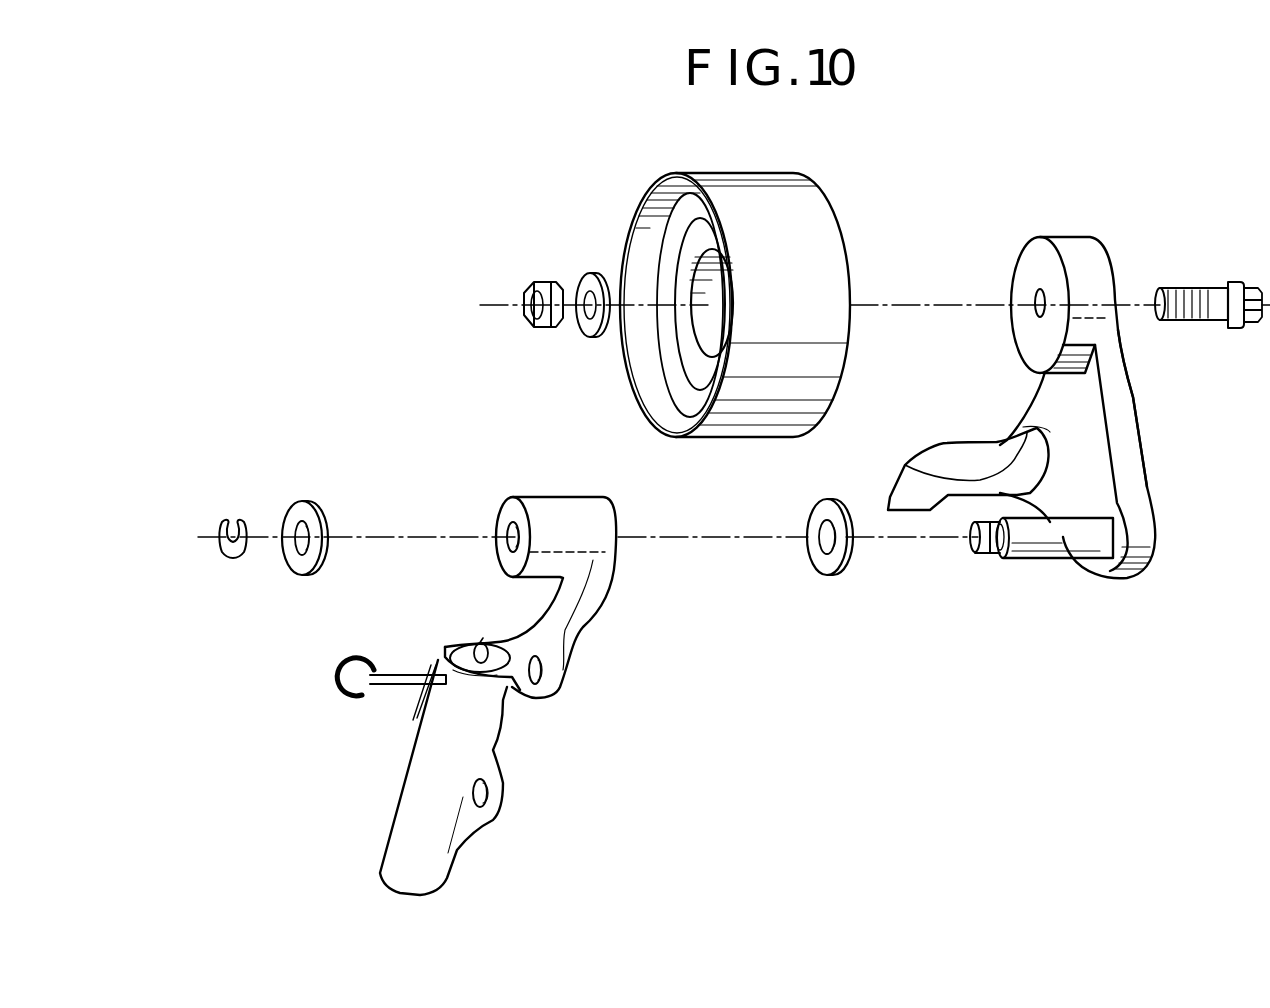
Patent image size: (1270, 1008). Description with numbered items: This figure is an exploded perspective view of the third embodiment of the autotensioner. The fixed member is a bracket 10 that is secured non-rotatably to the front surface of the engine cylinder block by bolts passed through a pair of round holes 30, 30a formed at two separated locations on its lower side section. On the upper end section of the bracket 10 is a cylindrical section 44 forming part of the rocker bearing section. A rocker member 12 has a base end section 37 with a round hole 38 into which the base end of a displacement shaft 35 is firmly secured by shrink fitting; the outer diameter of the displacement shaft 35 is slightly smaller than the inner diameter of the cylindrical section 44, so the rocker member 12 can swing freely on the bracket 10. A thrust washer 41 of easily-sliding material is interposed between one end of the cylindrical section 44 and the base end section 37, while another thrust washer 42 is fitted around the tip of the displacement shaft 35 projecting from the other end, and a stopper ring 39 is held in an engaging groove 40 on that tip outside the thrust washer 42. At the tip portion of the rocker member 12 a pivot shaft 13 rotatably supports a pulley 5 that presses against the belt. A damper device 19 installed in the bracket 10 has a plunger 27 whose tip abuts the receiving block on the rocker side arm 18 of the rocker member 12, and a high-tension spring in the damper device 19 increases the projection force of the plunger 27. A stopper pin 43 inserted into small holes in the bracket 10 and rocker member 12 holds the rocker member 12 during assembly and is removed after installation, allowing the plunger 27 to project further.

The pulley 5 is at (823, 212).
The pivot shaft 13 is at (1210, 287).
The rocker member 12 is at (1117, 398).
The base end section 37 is at (1130, 460).
The rocker side arm 18 is at (943, 455).
The engaging groove 40 is at (1002, 555).
The displacement shaft 35 is at (1058, 548).
The thrust washer 41 is at (823, 562).
The cylindrical section 44 is at (547, 510).
The round hole 38 is at (505, 527).
The thrust washer 42 is at (308, 500).
The stopper ring 39 is at (219, 521).
The plunger 27 is at (483, 648).
The round hole 30 is at (540, 672).
The stopper pin 43 is at (362, 702).
The damper device 19 is at (521, 606).
The round hole 30a is at (485, 793).
The bracket 10 is at (493, 777).